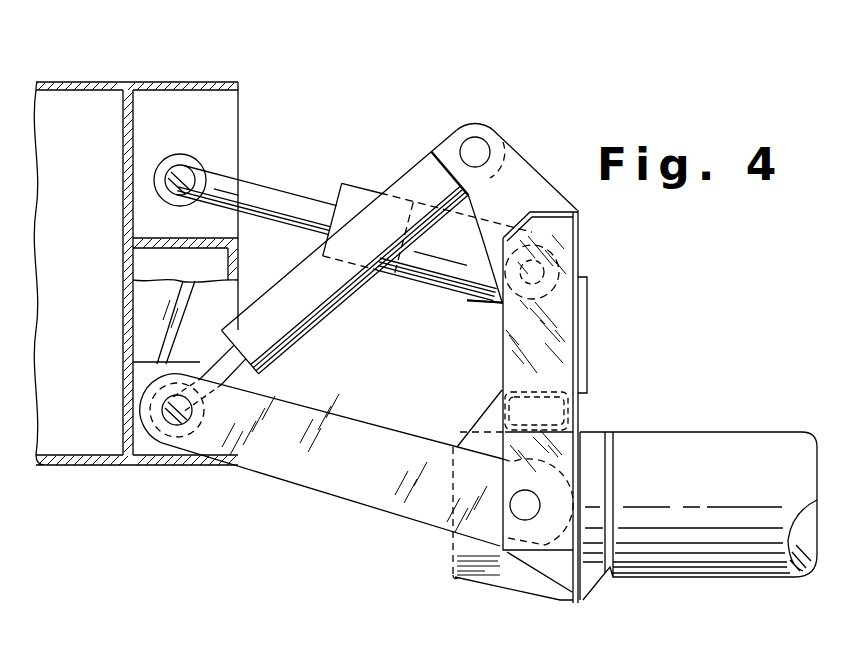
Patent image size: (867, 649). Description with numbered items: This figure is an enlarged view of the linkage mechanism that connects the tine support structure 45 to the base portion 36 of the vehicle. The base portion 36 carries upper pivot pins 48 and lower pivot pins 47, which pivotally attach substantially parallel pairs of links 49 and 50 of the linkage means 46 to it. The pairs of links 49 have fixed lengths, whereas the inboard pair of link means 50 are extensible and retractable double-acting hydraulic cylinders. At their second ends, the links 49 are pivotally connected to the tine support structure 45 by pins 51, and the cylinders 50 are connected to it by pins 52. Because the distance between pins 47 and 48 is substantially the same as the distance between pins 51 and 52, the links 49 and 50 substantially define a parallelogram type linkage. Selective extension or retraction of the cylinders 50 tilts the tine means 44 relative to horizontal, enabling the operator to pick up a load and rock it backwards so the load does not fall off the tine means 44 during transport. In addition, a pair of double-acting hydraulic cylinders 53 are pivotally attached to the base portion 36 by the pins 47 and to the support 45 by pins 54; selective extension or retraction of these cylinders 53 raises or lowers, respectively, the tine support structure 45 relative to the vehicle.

The base portion 36 is at (100, 297).
The tine means 44 is at (740, 496).
The tine support structure 45 is at (567, 342).
The linkage means 46 is at (377, 160).
The lower pivot pins 47 is at (163, 410).
The upper pivot pins 48 is at (197, 140).
The links 49 is at (372, 468).
The hydraulic cylinders 50 is at (346, 190).
The pins 51 is at (520, 508).
The pins 52 is at (540, 268).
The double-acting hydraulic cylinders 53 is at (302, 268).
The pins 54 is at (478, 148).